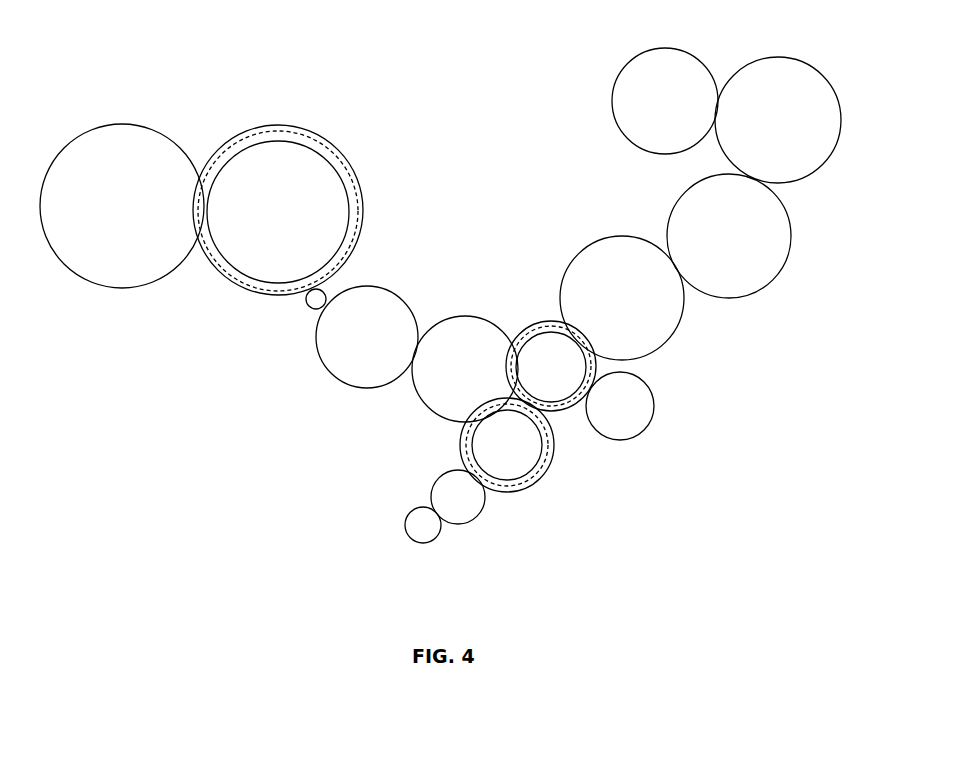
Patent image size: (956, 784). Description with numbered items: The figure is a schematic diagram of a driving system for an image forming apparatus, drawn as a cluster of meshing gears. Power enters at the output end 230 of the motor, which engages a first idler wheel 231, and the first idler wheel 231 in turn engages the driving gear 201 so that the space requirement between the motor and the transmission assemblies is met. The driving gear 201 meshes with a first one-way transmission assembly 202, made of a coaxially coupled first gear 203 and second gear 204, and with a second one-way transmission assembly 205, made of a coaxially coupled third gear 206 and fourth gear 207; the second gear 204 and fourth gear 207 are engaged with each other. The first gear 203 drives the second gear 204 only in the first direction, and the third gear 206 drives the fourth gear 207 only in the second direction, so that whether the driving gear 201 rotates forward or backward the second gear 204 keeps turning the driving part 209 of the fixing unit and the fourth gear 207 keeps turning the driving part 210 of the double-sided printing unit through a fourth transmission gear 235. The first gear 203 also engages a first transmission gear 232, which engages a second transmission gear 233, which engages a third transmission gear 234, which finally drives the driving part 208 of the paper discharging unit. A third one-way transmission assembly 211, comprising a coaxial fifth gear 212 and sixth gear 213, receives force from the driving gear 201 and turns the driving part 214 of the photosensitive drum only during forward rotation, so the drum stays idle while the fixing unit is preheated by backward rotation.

The driving gear 201 is at (428, 403).
The first one-way transmission assembly 202 is at (535, 327).
The first gear 203 is at (529, 347).
The second gear 204 is at (546, 322).
The second one-way transmission assembly 205 is at (497, 485).
The third gear 206 is at (510, 475).
The fourth gear 207 is at (487, 487).
The driving part of the paper discharge unit 208 is at (618, 120).
The driving part of the fixing unit 209 is at (607, 438).
The driving part of the double-sided printing unit 210 is at (405, 527).
The third one-way transmission assembly 211 is at (260, 287).
The fifth gear 212 is at (205, 257).
The sixth gear 213 is at (245, 263).
The driving part of the photosensitive drum 214 is at (111, 283).
The output end of the motor 230 is at (320, 295).
The first idler wheel 231 is at (325, 370).
The first transmission gear 232 is at (672, 337).
The second transmission gear 233 is at (733, 292).
The third transmission gear 234 is at (820, 165).
The fourth transmission gear 235 is at (437, 479).